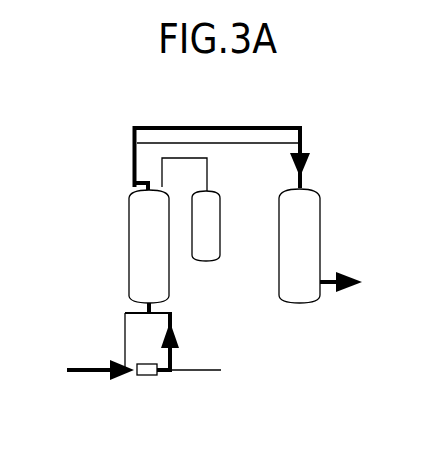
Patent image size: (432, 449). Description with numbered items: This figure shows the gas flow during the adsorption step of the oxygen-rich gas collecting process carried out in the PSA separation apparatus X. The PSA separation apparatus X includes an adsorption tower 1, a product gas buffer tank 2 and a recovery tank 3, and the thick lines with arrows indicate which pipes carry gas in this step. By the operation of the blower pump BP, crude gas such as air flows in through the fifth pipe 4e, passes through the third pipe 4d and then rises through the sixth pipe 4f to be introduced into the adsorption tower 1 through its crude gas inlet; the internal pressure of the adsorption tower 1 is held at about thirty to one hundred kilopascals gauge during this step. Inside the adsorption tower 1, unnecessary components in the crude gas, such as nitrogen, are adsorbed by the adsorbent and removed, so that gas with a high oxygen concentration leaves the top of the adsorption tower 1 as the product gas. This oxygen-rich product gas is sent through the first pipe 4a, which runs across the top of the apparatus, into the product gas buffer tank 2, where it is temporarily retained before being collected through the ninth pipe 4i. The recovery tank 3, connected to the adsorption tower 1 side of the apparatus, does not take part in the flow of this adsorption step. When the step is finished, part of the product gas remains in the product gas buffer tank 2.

The PSA separation apparatus X is at (86, 179).
The adsorption tower 1 is at (126, 224).
The product gas buffer tank 2 is at (324, 219).
The recovery tank 3 is at (222, 222).
The first pipe 4a is at (258, 127).
The third pipe 4d is at (163, 377).
The fifth pipe 4e is at (92, 367).
The sixth pipe 4f is at (173, 314).
The ninth pipe 4i is at (321, 279).
The blower pump BP is at (143, 376).